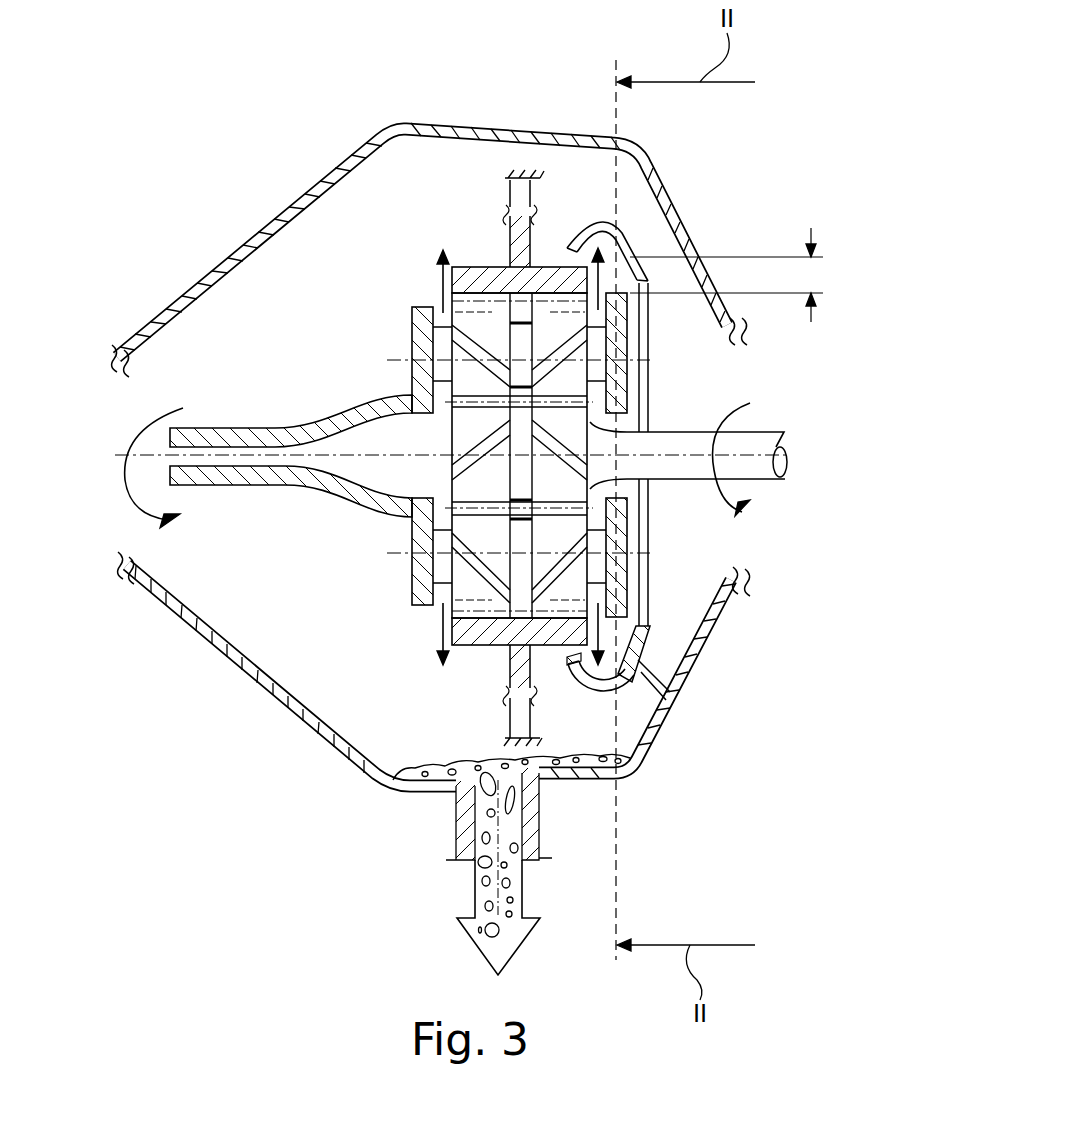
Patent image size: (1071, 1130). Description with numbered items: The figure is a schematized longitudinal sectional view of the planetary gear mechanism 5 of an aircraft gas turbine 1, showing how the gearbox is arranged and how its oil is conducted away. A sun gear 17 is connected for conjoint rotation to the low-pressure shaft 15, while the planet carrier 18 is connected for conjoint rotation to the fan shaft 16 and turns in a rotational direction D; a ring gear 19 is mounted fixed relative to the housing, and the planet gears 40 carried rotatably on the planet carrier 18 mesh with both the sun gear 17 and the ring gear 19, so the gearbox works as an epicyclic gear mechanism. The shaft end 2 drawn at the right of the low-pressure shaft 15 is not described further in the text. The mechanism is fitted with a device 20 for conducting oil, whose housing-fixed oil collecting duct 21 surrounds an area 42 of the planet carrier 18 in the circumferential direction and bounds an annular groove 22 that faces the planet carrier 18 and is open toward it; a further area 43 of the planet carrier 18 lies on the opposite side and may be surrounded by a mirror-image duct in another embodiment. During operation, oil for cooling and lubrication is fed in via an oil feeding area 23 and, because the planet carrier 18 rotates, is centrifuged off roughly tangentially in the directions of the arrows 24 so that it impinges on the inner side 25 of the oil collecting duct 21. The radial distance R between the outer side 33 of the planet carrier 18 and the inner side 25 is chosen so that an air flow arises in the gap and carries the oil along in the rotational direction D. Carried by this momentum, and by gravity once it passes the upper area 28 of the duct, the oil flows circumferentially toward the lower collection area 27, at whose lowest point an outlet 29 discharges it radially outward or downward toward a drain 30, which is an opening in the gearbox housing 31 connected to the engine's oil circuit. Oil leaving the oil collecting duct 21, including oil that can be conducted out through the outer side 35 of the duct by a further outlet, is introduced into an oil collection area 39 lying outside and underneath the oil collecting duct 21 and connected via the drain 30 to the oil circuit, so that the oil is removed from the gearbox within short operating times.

The aircraft gas turbine 1 is at (97, 277).
The drive shaft 2 is at (789, 457).
The planetary gear mechanism 5 is at (431, 454).
The low-pressure shaft 15 is at (757, 448).
The fan shaft 16 is at (221, 440).
The sun gear 17 is at (463, 484).
The planet carrier 18 is at (631, 377).
The ring gear 19 is at (471, 638).
The device for conducting oil 20 is at (656, 625).
The oil collecting duct 21 is at (641, 657).
The annular groove 22 is at (633, 670).
The oil feeding area 23 is at (476, 567).
The arrows 24 is at (645, 655).
The inner side of the oil collecting duct 25 is at (613, 225).
The collection area 27 is at (617, 692).
The upper area 28 is at (586, 220).
The outlet 29 is at (606, 700).
The drain 30 is at (455, 794).
The gearbox housing 31 is at (222, 265).
The outer side of the planet carrier 33 is at (632, 292).
The outer side of the oil collecting duct 35 is at (572, 245).
The oil collection area 39 is at (513, 848).
The planet gears 40 is at (487, 332).
The area of the planet carrier 42 is at (621, 333).
The further area of the planet carrier 43 is at (415, 342).
The rotational direction D is at (126, 450).
The radial distance R is at (814, 277).